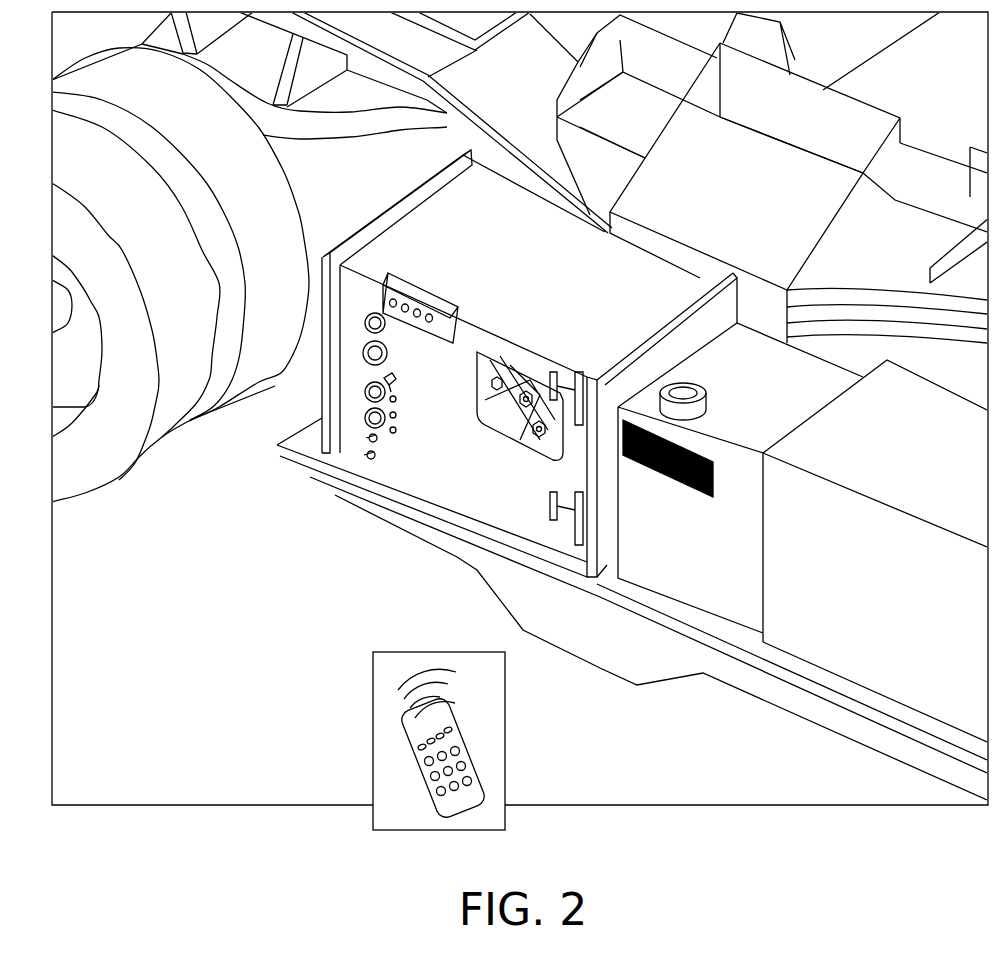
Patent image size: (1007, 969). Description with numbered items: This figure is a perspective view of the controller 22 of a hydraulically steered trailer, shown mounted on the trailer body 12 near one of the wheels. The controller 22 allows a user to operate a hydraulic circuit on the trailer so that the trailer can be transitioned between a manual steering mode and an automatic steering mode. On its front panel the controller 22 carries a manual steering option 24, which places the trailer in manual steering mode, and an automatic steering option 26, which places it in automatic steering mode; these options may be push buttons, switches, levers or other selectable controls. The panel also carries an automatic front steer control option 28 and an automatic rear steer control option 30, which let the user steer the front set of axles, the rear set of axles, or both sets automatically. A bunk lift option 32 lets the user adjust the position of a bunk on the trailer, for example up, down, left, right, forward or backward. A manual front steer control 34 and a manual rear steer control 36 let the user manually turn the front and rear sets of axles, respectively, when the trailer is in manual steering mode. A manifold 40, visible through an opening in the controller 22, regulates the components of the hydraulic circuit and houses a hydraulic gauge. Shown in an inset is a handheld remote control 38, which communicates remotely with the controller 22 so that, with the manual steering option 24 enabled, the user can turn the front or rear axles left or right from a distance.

The trailer body 12 is at (760, 687).
The controller 22 is at (417, 247).
The manual steering option 24 is at (277, 445).
The automatic steering option 26 is at (380, 380).
The automatic front steer control option 28 is at (365, 452).
The automatic rear steer control option 30 is at (373, 435).
The bunk lift option 32 is at (368, 358).
The manual front steer control 34 is at (365, 324).
The manual rear steer control 36 is at (383, 283).
The remote control 38 is at (437, 810).
The manifold 40 is at (493, 460).